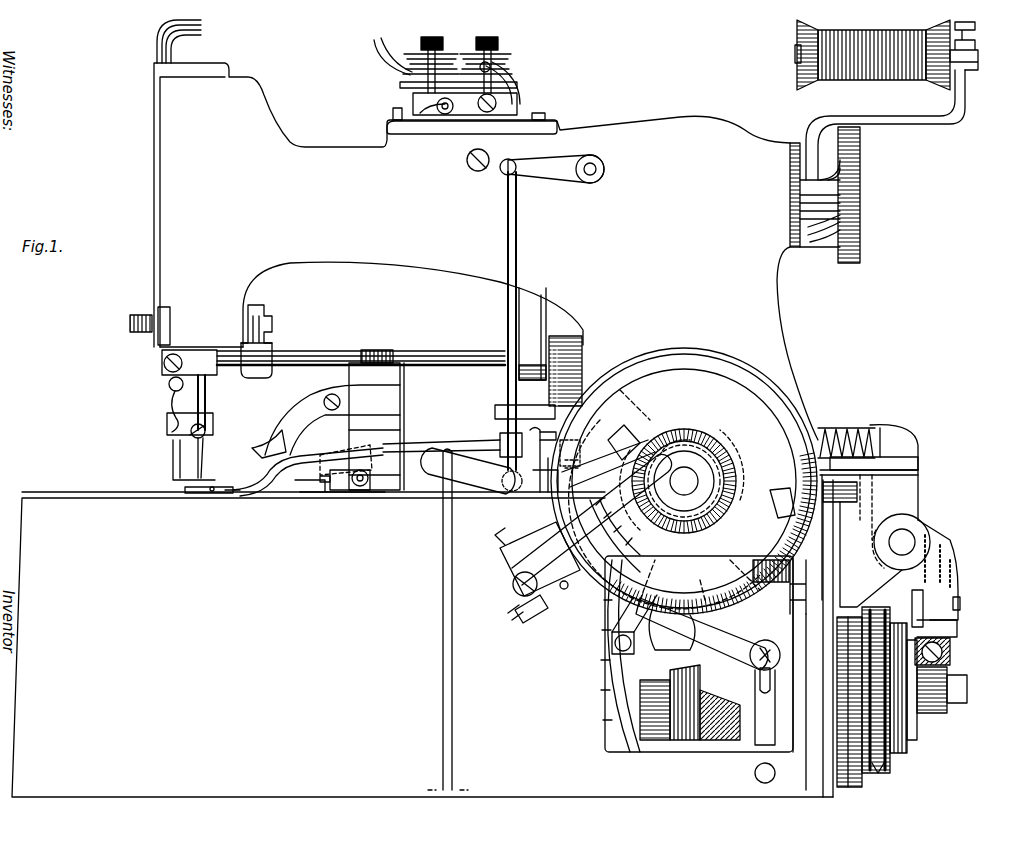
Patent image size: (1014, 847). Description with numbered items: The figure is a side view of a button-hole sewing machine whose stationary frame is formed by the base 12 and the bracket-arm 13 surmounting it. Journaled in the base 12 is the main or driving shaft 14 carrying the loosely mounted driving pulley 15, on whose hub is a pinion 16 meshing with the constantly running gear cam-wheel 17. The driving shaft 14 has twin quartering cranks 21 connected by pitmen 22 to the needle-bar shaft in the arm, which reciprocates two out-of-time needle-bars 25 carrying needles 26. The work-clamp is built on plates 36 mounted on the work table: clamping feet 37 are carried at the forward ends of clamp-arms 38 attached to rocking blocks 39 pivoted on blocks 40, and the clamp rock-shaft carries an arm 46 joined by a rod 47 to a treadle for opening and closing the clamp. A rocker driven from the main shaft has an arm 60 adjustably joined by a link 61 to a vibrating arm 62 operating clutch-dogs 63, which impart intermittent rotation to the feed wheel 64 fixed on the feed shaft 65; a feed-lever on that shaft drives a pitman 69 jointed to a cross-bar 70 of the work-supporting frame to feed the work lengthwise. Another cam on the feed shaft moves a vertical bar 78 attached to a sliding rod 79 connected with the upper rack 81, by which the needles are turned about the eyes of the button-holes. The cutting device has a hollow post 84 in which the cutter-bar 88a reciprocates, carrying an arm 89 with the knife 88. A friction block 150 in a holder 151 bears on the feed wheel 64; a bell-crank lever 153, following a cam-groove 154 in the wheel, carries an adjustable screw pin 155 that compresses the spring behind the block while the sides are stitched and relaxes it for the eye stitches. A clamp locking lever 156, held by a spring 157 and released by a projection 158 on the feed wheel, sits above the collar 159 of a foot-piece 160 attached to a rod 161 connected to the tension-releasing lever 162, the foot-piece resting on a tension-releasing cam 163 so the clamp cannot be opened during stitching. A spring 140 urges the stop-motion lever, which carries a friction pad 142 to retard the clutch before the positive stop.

The base 12 is at (422, 647).
The bracket-arm 13 is at (472, 183).
The main or driving shaft 14 is at (975, 700).
The driving pulley 15 is at (890, 770).
The pinion 16 is at (836, 700).
The gear cam-wheel 17 is at (710, 673).
The twin quartering cranks 21 is at (690, 708).
The pitmen 22 is at (653, 624).
The needle-bars 25 is at (210, 400).
The needles 26 is at (205, 470).
The plates 36 is at (418, 492).
The upper clamping plates or clamping feet 37 is at (232, 495).
The clamp-arms 38 is at (258, 470).
The rocking blocks 39 is at (345, 461).
The plates or blocks 40 is at (334, 484).
The arm 46 is at (471, 471).
The rod 47 is at (428, 578).
The second arm of rocker 60 is at (763, 706).
The link 61 is at (708, 634).
The vibrating arm 62 is at (664, 514).
The clutch-dogs 63 is at (701, 478).
The feed wheel 64 is at (684, 481).
The feed shaft 65 is at (700, 470).
The link or pitman 69 is at (602, 656).
The cross-bar 70 is at (790, 572).
The vertical bar 78 is at (570, 405).
The sliding rod 79 is at (440, 350).
The upper rack 81 is at (128, 323).
The hollow post or standard 84 is at (404, 395).
The knife or cutter 88 is at (258, 432).
The cutter-bar 88a is at (380, 349).
The arm 89 is at (332, 420).
The spring 140 is at (848, 432).
The friction pad 142 is at (914, 583).
The friction block 150 is at (608, 545).
The holder 151 is at (592, 519).
The bell-crank lever 153 is at (525, 557).
The cam-groove 154 is at (668, 440).
The adjustable screw pin 155 is at (540, 612).
The clamp locking lever 156 is at (545, 430).
The spring 157 is at (583, 414).
The cam or projection 158 is at (566, 458).
The collar 159 is at (498, 428).
The foot-piece 160 is at (498, 445).
The rod 161 is at (507, 383).
The tension-releasing lever 162 is at (558, 180).
The tension-releasing cam 163 is at (486, 478).